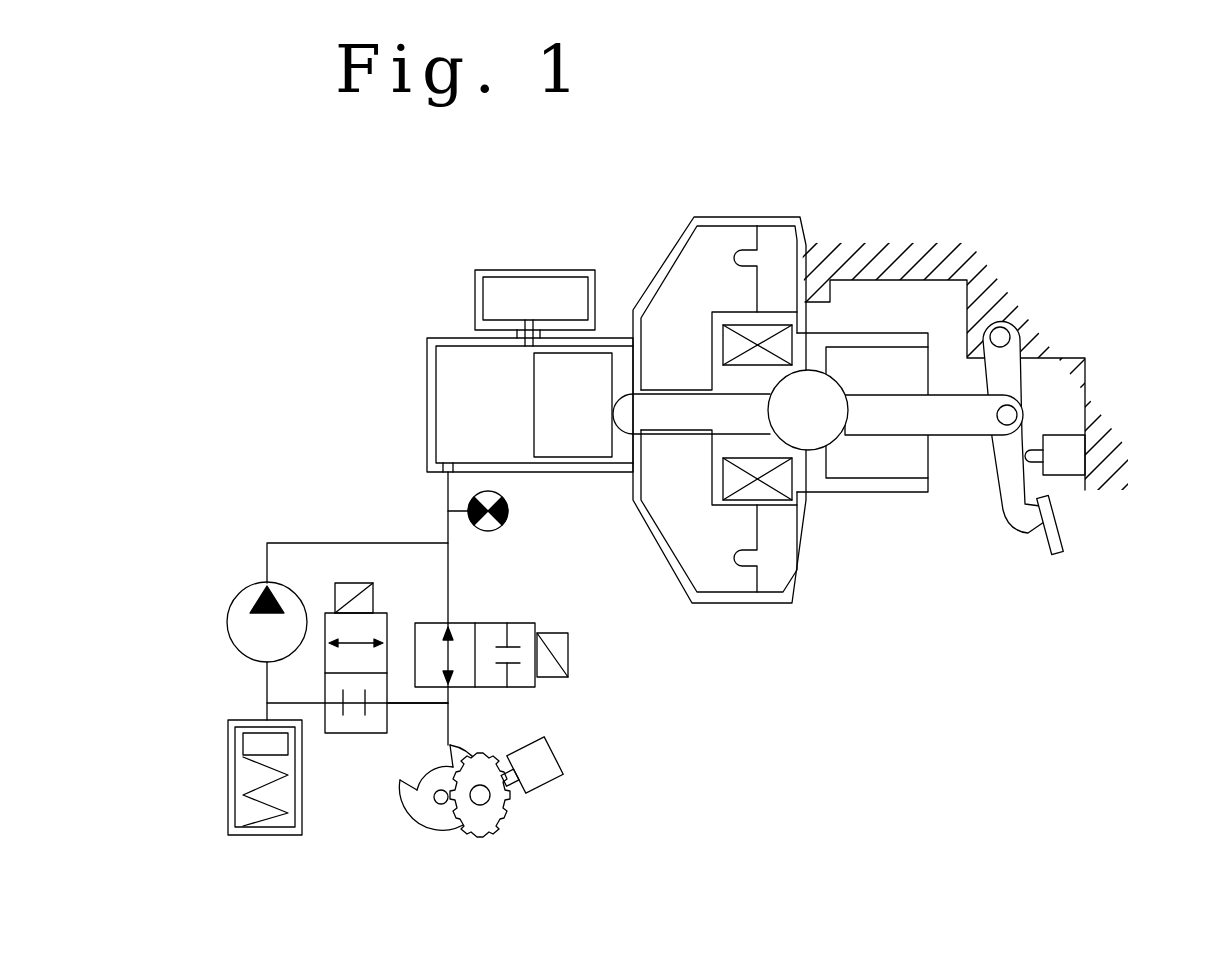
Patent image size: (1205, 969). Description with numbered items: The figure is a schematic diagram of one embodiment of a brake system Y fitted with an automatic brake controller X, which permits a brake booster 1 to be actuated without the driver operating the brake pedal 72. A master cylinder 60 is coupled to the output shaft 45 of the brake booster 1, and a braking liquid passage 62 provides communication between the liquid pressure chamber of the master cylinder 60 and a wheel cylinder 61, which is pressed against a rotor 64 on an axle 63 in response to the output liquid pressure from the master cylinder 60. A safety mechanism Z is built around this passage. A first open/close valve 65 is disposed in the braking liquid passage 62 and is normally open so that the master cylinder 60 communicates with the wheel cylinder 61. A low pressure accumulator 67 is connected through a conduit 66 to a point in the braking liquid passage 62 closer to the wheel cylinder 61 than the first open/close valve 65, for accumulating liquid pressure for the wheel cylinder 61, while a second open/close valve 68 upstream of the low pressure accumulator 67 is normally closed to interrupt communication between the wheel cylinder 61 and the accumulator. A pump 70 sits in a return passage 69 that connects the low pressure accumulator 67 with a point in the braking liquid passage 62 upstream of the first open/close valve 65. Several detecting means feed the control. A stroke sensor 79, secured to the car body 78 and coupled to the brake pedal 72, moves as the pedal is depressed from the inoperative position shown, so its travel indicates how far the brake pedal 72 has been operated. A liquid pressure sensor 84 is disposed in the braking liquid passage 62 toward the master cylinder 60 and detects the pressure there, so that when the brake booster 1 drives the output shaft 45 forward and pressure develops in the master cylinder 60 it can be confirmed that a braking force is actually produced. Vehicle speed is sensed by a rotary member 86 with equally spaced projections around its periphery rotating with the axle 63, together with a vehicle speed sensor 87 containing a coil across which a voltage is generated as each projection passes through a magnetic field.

The brake booster 1 is at (763, 214).
The output shaft 45 is at (684, 423).
The master cylinder 60 is at (440, 338).
The wheel cylinder 61 is at (435, 807).
The braking liquid passage 62 is at (448, 580).
The axle 63 is at (441, 804).
The rotor 64 is at (404, 805).
The first open/close valve 65 is at (530, 622).
The conduit 66 is at (411, 703).
The low pressure accumulator 67 is at (228, 760).
The second open/close valve 68 is at (352, 583).
The return passage 69 is at (336, 543).
The pump 70 is at (228, 612).
The brake pedal 72 is at (1062, 528).
The car body 78 is at (1077, 330).
The stroke sensor 79 is at (1062, 465).
The liquid pressure sensor 84 is at (510, 511).
The rotary member 86 is at (505, 803).
The vehicle speed sensor 87 is at (547, 760).
The automatic brake controller X is at (778, 305).
The brake system Y is at (585, 240).
The safety mechanism Z is at (258, 493).